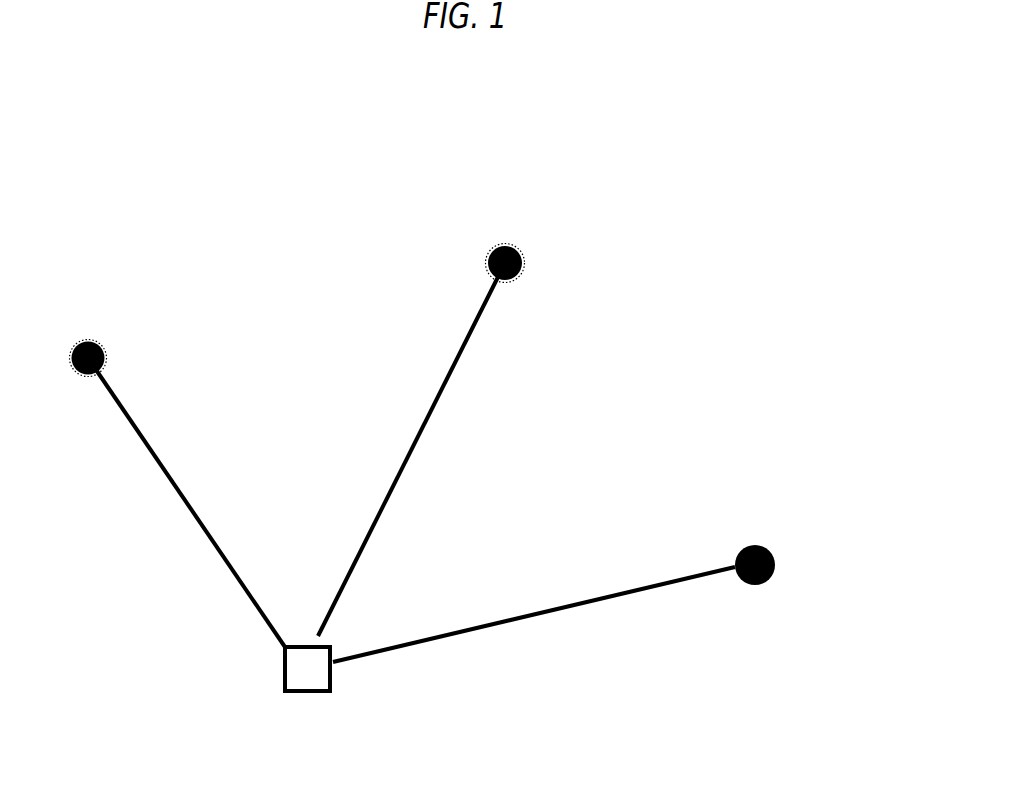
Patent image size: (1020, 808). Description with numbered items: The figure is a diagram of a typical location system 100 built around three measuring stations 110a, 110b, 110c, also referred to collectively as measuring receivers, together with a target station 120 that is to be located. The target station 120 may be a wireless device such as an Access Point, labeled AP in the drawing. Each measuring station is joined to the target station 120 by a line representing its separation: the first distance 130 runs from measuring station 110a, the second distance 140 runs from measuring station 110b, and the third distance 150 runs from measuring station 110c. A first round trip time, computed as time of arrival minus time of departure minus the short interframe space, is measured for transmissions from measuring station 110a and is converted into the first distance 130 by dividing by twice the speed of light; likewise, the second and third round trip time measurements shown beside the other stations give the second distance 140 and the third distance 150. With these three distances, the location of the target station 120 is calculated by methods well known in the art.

The location system 100 is at (730, 180).
The measuring station 110a is at (87, 335).
The measuring station 110b is at (507, 242).
The measuring station 110c is at (755, 542).
The target station 120 is at (282, 665).
The distance D1 130 is at (158, 453).
The distance D2 140 is at (438, 392).
The distance D3 150 is at (637, 583).